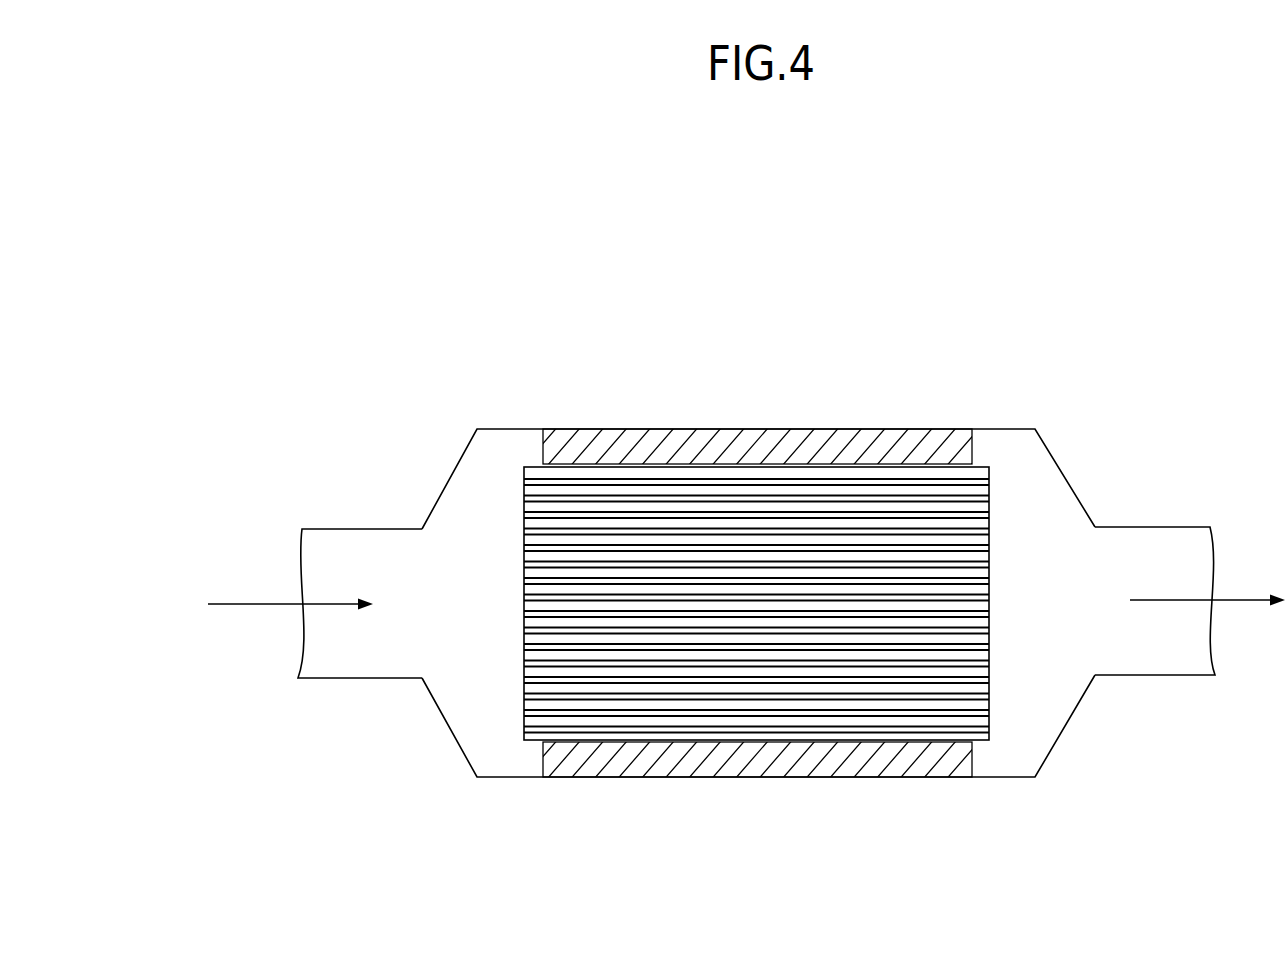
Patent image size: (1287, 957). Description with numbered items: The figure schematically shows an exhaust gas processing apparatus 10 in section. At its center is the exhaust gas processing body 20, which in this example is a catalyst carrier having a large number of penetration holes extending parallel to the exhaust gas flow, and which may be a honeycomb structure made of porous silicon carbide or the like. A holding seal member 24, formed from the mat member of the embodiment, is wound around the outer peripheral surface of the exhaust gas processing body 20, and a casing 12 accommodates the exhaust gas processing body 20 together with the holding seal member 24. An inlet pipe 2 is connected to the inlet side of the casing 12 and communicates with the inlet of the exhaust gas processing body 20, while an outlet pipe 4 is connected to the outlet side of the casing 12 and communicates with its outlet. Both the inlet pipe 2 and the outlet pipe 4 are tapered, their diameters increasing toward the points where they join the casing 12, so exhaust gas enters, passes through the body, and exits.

The inlet pipe 2 is at (362, 529).
The outlet pipe 4 is at (1180, 527).
The exhaust gas processing apparatus 10 is at (880, 296).
The casing 12 is at (1003, 778).
The exhaust gas processing body 20 is at (1004, 506).
The holding seal member 24 is at (720, 437).